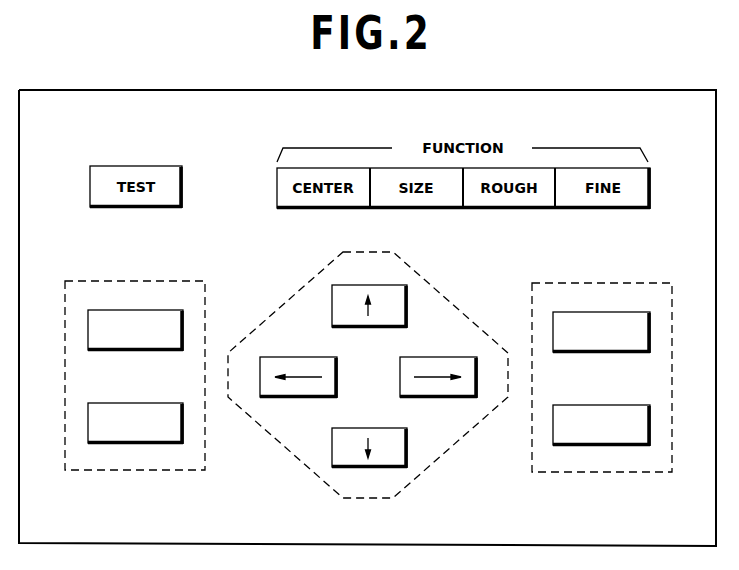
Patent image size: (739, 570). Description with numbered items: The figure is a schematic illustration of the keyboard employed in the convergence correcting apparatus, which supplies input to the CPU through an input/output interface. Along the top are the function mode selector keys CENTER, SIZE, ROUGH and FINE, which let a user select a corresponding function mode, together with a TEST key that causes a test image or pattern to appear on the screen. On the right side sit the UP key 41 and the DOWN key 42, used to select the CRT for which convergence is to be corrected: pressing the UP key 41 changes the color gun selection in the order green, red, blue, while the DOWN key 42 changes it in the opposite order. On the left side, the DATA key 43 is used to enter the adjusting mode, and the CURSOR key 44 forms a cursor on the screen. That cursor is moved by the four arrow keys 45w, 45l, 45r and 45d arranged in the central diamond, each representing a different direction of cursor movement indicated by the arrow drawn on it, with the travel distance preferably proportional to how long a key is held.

The UP key 41 is at (592, 353).
The DOWN key 42 is at (627, 405).
The DATA key 43 is at (130, 352).
The CURSOR key 44 is at (167, 403).
The arrow key 45w is at (461, 344).
The arrow key 45l is at (288, 357).
The arrow key 45r is at (457, 434).
The arrow key 45d is at (343, 427).